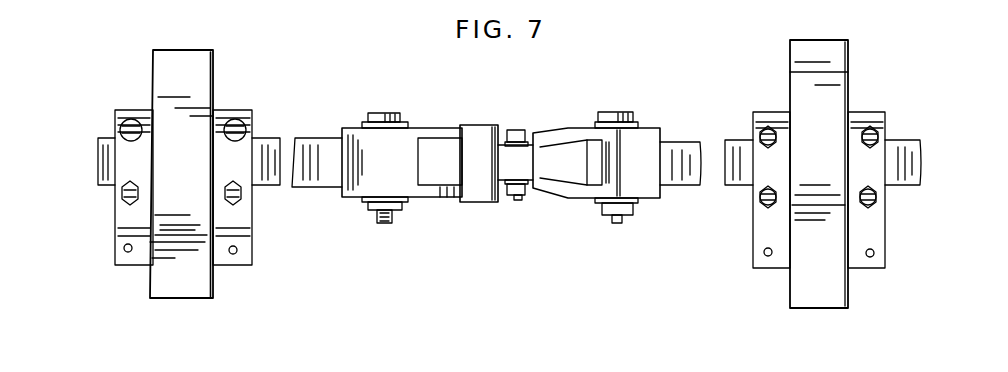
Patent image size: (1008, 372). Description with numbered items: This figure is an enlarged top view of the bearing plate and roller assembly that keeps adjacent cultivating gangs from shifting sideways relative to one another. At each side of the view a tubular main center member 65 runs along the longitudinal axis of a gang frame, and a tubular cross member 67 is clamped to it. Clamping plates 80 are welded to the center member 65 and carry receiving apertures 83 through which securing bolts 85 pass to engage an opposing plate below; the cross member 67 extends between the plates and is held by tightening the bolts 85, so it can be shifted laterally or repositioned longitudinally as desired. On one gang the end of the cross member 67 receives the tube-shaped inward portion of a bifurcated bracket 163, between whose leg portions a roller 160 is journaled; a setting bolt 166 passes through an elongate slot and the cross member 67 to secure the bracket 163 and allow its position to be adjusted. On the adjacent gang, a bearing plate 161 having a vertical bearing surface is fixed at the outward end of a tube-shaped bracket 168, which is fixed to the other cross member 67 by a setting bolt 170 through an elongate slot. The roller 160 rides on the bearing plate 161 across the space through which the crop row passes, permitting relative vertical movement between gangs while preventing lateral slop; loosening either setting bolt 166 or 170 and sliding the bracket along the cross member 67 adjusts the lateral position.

The main center member 65 is at (190, 283).
The cross member 67 is at (271, 187).
The clamping plate 80 is at (217, 112).
The receiving aperture 83 is at (133, 252).
The securing bolt 85 is at (248, 124).
The roller 160 is at (517, 160).
The bearing plate 161 is at (482, 135).
The bifurcated bracket 163 is at (570, 130).
The setting bolt 166 is at (612, 223).
The tube-shaped bracket 168 is at (357, 188).
The setting bolt 170 is at (385, 113).